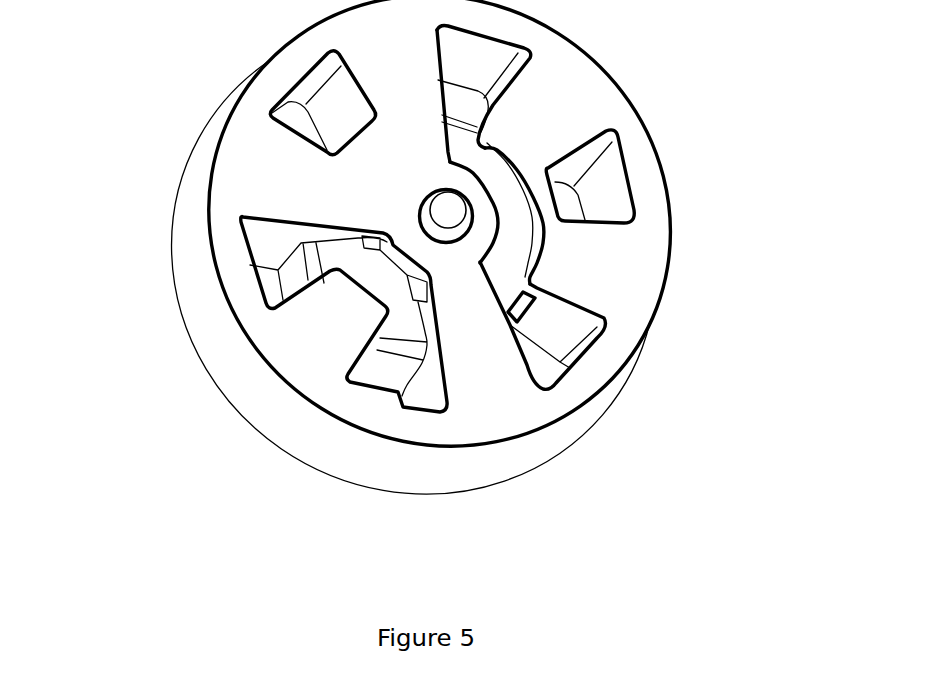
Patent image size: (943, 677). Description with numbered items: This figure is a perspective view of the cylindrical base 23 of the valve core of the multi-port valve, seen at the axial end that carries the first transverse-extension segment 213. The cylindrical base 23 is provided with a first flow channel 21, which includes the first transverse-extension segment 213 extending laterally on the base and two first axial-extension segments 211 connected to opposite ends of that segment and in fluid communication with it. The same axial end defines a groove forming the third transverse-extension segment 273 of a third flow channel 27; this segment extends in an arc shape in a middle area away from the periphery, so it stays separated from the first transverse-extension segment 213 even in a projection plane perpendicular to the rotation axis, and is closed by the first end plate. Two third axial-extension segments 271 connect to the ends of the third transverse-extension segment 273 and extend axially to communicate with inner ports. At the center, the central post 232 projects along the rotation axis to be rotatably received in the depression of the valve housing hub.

The cylindrical base 23 is at (716, 153).
The first flow channel 21 is at (631, 208).
The first axial-extension segment 211 is at (477, 78).
The first transverse-extension segment 213 is at (518, 215).
The third flow channel 27 is at (252, 351).
The third transverse-extension segment 273 is at (378, 283).
The third axial-extension segment 271 is at (420, 389).
The central post 232 is at (452, 218).